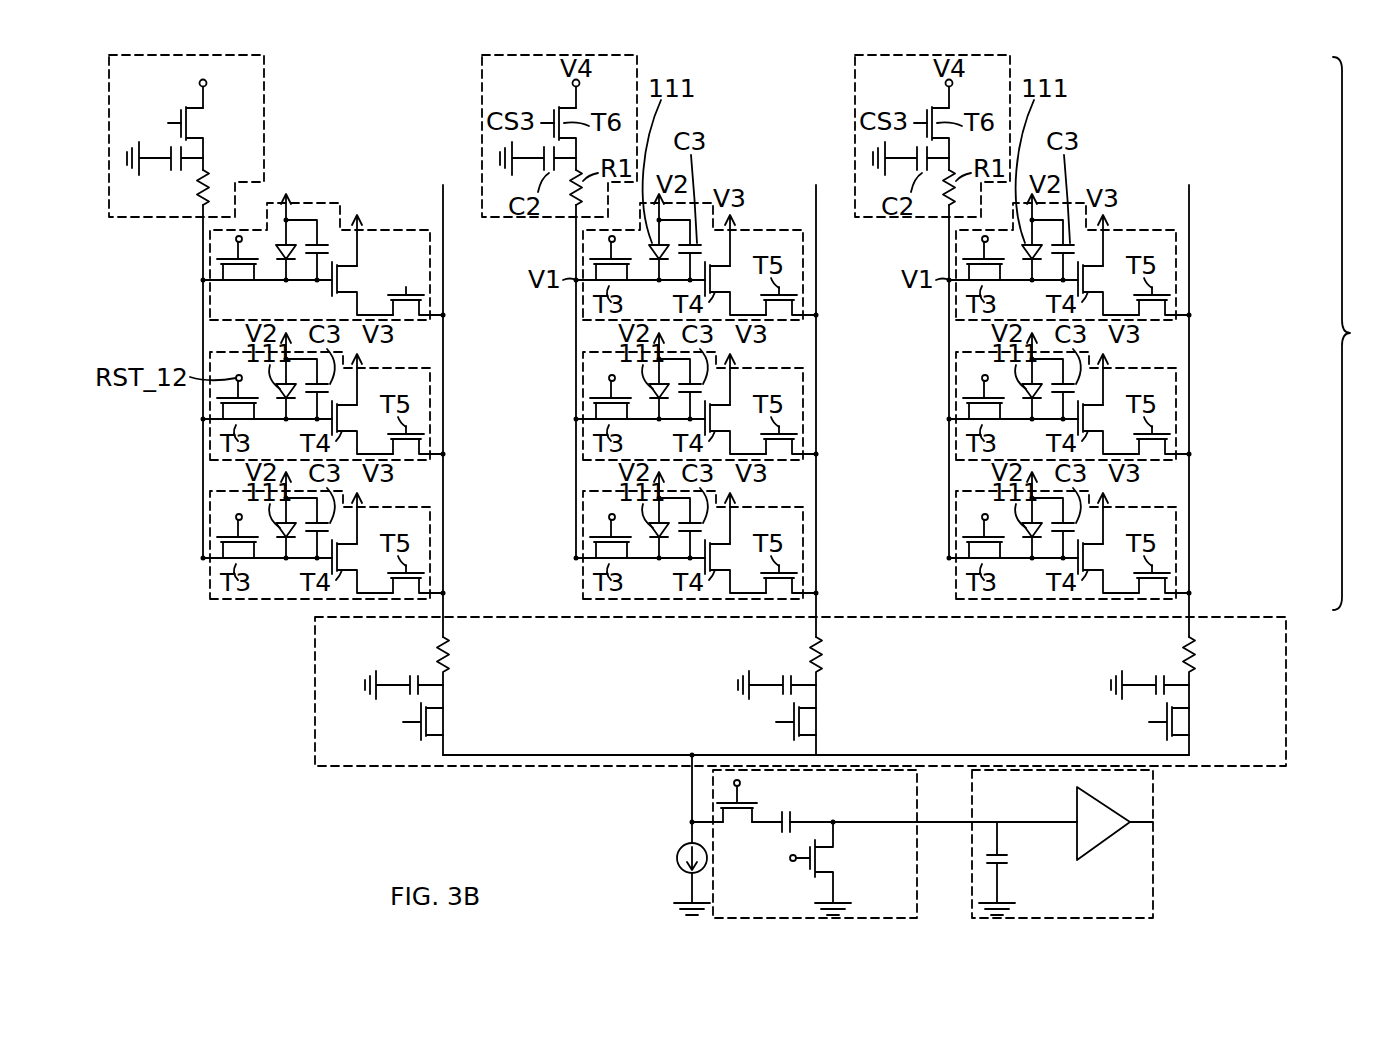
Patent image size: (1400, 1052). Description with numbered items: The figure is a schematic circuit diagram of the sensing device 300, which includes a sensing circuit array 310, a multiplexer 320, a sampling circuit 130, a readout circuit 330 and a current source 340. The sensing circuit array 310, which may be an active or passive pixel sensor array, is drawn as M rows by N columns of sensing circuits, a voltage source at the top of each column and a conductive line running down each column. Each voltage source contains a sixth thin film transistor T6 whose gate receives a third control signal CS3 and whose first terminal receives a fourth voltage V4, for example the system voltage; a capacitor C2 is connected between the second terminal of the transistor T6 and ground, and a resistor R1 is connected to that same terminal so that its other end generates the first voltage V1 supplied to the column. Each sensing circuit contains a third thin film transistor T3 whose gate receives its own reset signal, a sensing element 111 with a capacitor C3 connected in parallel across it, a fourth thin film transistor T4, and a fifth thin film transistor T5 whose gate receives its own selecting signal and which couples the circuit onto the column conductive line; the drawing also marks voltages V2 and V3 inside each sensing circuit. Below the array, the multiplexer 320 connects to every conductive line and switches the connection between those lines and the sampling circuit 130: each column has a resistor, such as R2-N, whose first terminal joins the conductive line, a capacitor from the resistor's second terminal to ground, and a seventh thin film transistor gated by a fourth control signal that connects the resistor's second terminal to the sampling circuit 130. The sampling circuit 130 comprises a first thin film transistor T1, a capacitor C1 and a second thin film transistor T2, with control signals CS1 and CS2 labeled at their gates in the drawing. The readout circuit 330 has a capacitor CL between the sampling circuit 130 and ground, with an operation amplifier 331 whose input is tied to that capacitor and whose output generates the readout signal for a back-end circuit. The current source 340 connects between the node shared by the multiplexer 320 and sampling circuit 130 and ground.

The sensing device 300 is at (75, 34).
The sensing circuit array 310 is at (1366, 333).
The multiplexer 320 is at (1288, 690).
The readout circuit 330 is at (1156, 856).
The operation amplifier 331 is at (1098, 846).
The current source 340 is at (677, 858).
The sampling circuit 130 is at (917, 893).
The sensing element 111 is at (279, 243).
The third thin film transistor T3 is at (236, 286).
The fourth thin film transistor T4 is at (342, 292).
The fifth thin film transistor T5 is at (406, 288).
The sixth thin film transistor T6 is at (191, 123).
The capacitor C2 is at (176, 173).
The capacitor C3 is at (324, 243).
The resistor R1 is at (210, 181).
The first voltage V1 is at (203, 280).
The voltage V2 is at (298, 195).
The voltage V3 is at (356, 225).
The fourth voltage V4 is at (203, 81).
The third control signal CS3 is at (147, 121).
The resistor R2-N is at (1195, 659).
The first thin film transistor T1 is at (737, 824).
The second thin film transistor T2 is at (821, 860).
The capacitor C1 is at (793, 812).
The control signal CS1 is at (740, 781).
The control signal CS2 is at (793, 861).
The capacitor CL is at (1008, 860).